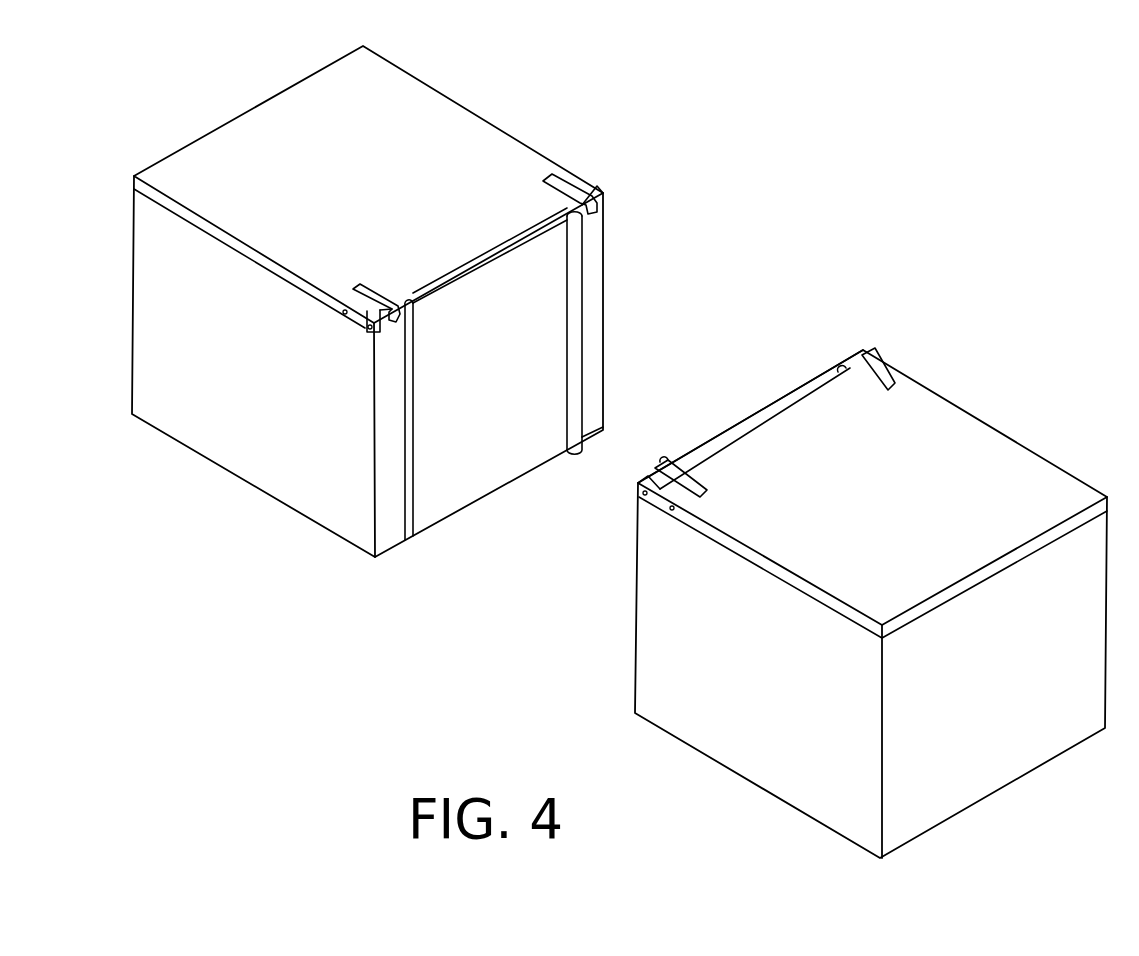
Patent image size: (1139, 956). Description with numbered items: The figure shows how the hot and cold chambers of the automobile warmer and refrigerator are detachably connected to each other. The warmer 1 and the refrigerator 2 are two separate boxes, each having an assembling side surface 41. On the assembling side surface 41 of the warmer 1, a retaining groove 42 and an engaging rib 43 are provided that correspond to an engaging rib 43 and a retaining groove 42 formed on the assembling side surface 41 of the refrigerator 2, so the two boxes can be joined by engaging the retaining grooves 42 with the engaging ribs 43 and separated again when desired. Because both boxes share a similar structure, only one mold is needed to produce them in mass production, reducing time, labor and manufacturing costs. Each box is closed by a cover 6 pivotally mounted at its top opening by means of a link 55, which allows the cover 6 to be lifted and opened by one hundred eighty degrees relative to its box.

The warmer 1 is at (518, 122).
The refrigerator 2 is at (996, 412).
The cover 6 is at (192, 162).
The assembling side surface 41 is at (483, 430).
The retaining groove 42 is at (408, 495).
The engaging rib 43 is at (572, 338).
The link 55 is at (575, 193).